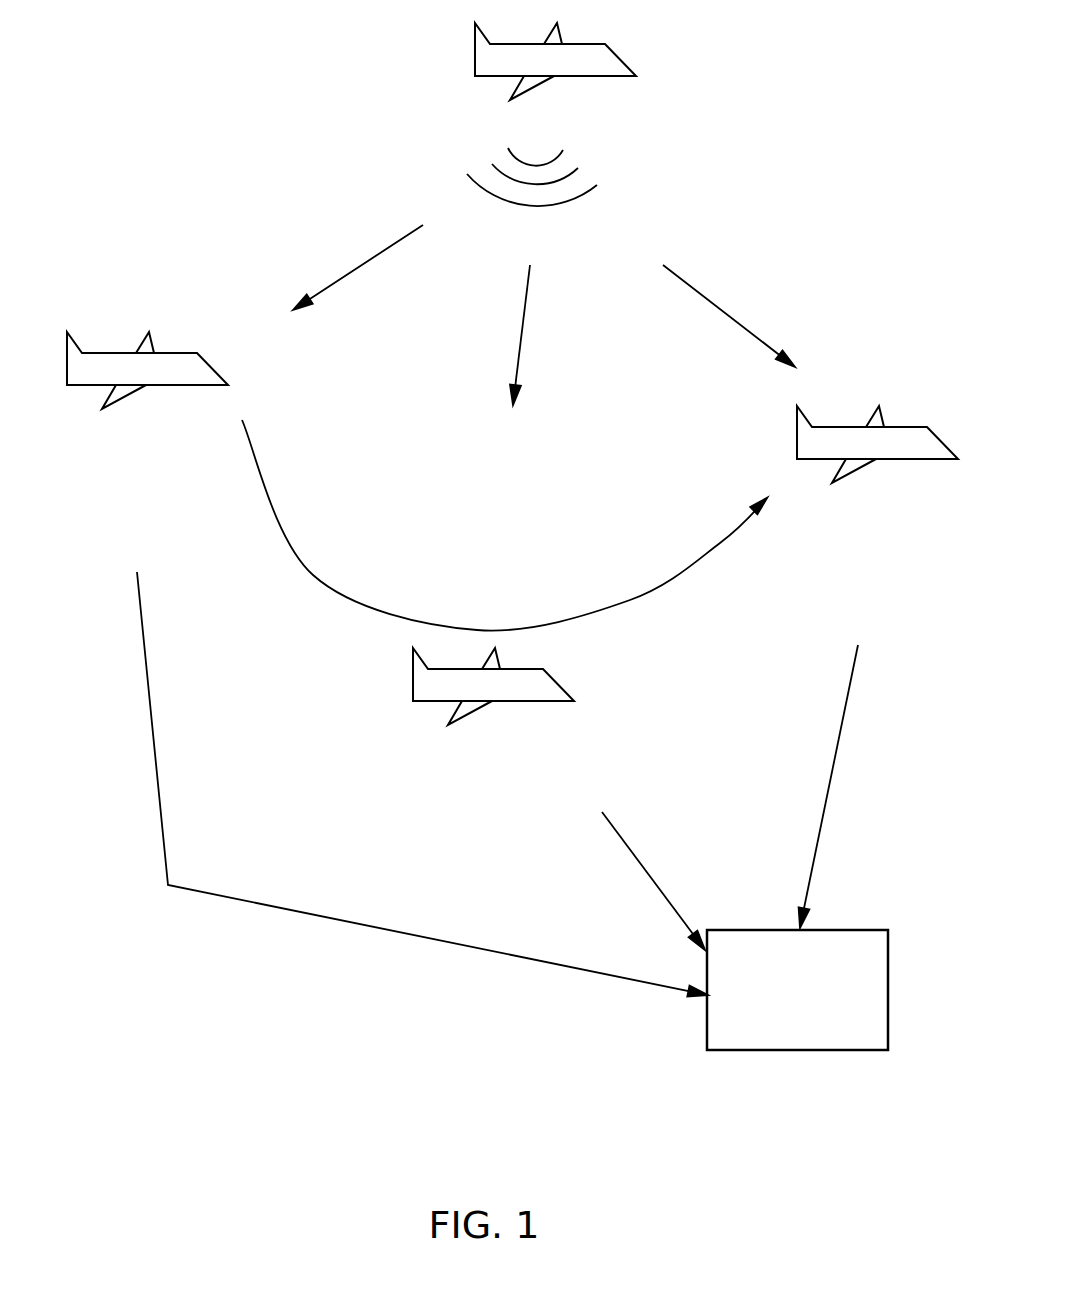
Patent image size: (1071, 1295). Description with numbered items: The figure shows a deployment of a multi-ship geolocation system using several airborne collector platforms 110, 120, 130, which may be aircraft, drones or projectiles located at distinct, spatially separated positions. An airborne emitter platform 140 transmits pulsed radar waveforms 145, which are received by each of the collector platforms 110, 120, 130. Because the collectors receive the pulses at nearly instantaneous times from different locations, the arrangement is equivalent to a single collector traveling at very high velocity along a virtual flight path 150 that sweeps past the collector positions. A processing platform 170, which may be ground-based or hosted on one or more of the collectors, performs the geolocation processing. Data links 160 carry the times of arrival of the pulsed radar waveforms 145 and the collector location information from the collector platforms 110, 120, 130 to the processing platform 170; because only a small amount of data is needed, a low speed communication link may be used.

The airborne collector platform 110 is at (127, 503).
The airborne collector platform 120 is at (472, 820).
The airborne collector platform 130 is at (857, 578).
The airborne emitter platform 140 is at (671, 57).
The pulsed radar waveforms 145 is at (581, 275).
The virtual flight path 150 is at (392, 560).
The data links 160 is at (920, 816).
The processing platform 170 is at (784, 1026).